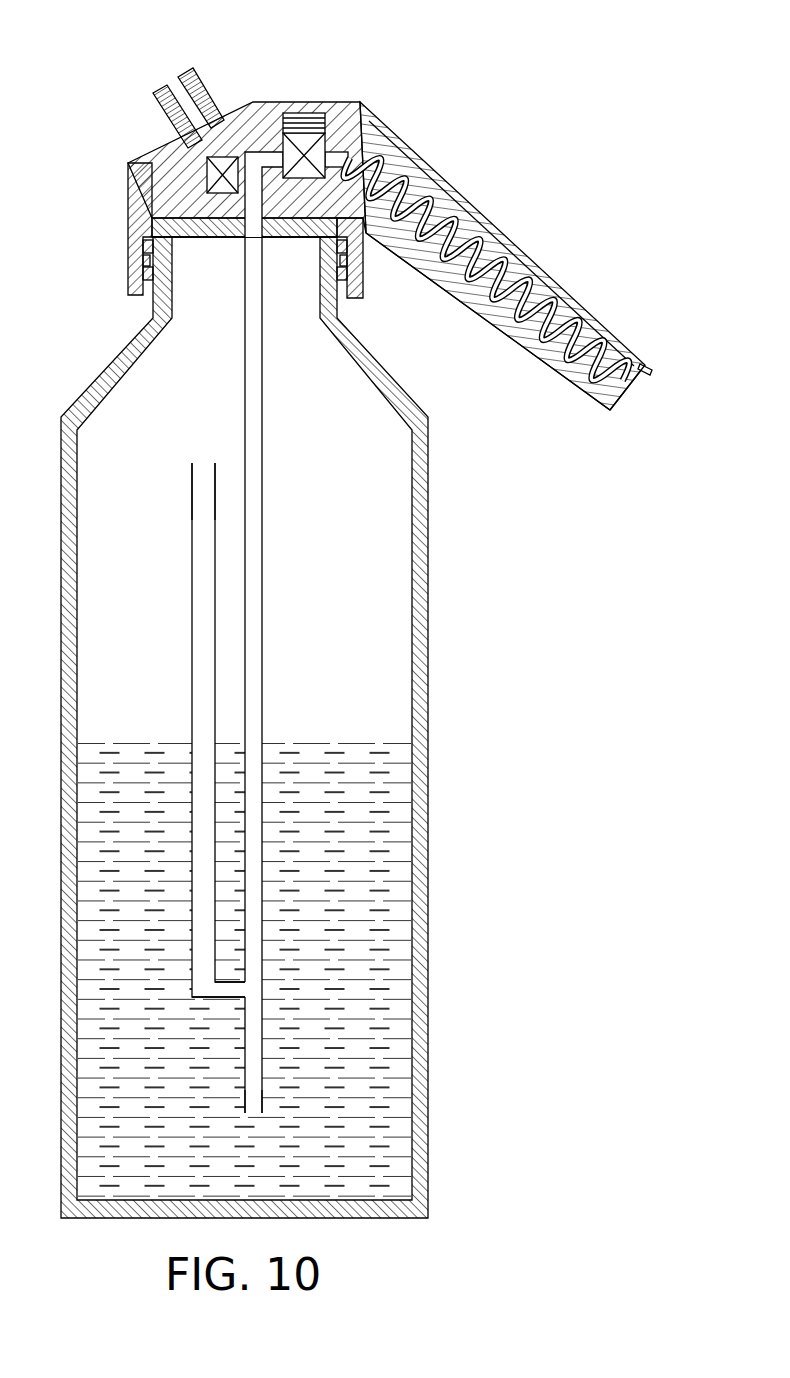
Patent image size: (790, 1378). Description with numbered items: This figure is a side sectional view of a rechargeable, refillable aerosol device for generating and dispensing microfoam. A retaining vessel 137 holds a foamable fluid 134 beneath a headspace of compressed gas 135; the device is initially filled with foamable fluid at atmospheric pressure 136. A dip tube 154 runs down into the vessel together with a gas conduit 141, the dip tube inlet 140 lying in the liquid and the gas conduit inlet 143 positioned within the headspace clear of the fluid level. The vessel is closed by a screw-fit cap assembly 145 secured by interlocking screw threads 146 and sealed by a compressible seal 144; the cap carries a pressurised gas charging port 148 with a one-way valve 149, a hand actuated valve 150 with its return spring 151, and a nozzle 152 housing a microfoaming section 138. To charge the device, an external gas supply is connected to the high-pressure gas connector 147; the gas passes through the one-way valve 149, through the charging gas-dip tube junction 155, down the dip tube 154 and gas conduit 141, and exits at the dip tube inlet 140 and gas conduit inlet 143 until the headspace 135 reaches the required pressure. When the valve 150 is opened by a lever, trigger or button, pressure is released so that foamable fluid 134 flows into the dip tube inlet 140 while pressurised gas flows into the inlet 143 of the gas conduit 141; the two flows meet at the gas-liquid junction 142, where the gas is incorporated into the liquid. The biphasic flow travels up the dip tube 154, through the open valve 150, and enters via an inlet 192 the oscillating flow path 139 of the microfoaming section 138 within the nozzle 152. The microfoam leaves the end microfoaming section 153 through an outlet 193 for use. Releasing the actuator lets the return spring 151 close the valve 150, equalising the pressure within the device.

The foamable fluid 134 is at (395, 1055).
The headspace of compressed gas 135 is at (400, 663).
The foamable fluid at atmospheric pressure 136 is at (280, 726).
The retaining vessel 137 is at (428, 848).
The microfoaming section 138 is at (570, 312).
The oscillating flow path 139 is at (557, 372).
The dip tube inlet 140 is at (255, 1118).
The gas conduit 141 is at (192, 658).
The gas-liquid junction 142 is at (242, 990).
The gas conduit inlet 143 is at (206, 455).
The seal 144 is at (285, 238).
The cap assembly 145 is at (130, 180).
The interlocking screw threads 146 is at (363, 288).
The high-pressure gas connector 147 is at (204, 78).
The pressurised gas charging port 148 is at (168, 71).
The one-way valve 149 is at (207, 173).
The hand actuated valve 150 is at (363, 114).
The return spring 151 is at (308, 118).
The nozzle 152 is at (417, 167).
The end microfoaming section 153 is at (624, 376).
The dip tube 154 is at (263, 605).
The charging gas-dip tube junction 155 is at (232, 220).
The inlet 192 is at (387, 145).
The outlet 193 is at (630, 366).